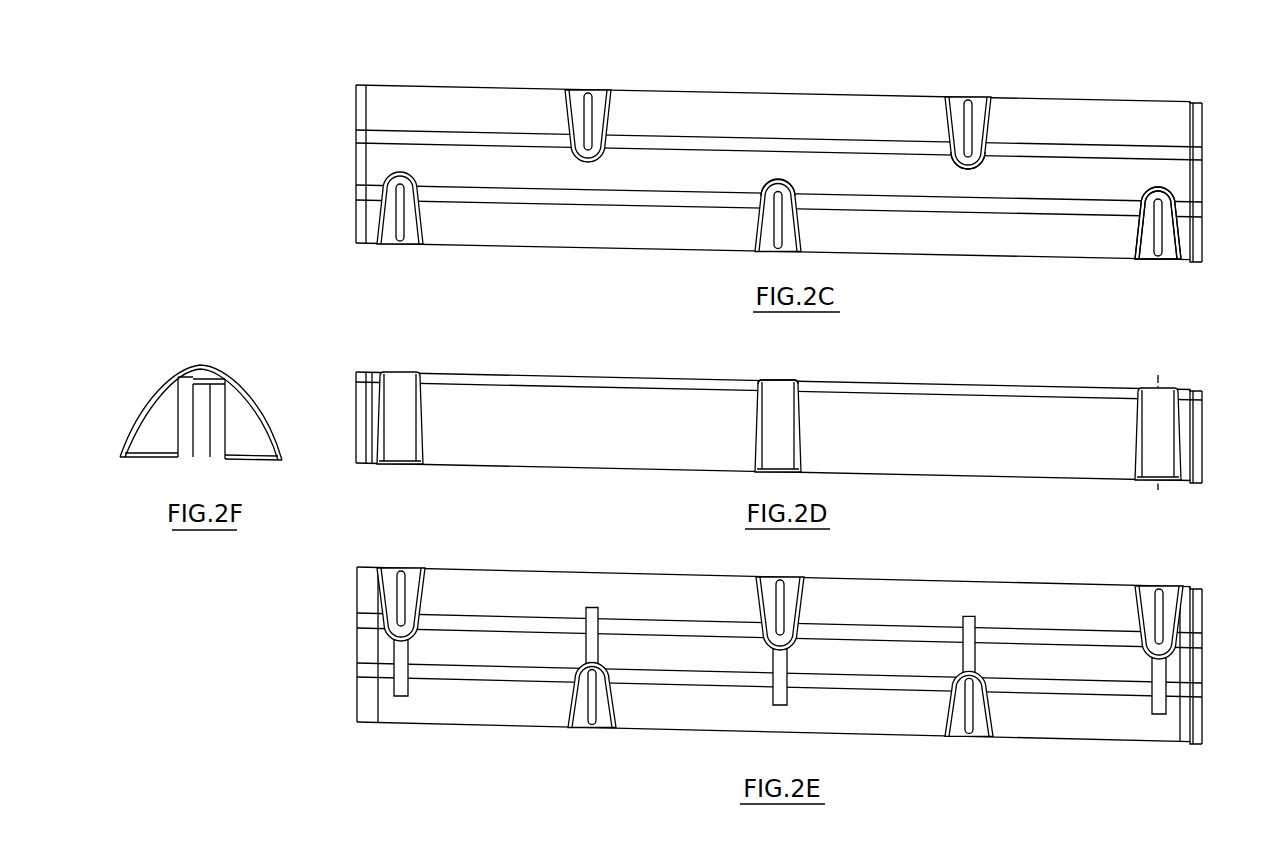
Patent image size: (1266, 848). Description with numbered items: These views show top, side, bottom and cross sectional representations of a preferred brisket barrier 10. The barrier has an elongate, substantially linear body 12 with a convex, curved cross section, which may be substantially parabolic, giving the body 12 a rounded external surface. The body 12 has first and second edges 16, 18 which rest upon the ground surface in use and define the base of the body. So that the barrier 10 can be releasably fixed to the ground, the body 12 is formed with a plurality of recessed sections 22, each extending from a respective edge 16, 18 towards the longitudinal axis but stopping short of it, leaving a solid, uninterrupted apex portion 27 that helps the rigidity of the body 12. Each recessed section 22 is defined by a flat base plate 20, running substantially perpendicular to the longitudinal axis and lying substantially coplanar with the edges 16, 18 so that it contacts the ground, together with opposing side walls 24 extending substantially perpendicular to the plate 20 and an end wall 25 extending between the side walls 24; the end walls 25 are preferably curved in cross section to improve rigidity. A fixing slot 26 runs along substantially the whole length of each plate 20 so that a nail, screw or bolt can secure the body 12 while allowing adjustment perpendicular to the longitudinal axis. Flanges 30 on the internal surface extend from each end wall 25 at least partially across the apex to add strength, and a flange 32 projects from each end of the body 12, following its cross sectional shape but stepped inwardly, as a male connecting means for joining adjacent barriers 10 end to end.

In FIG. 2C, the brisket barrier 10 is at (1203, 88).
In FIG. 2D, the brisket barrier 10 is at (1203, 386).
In FIG. 2E, the brisket barrier 10 is at (1203, 588).
In FIG. 2F, the brisket barrier 10 is at (245, 359).
In FIG. 2C, the body 12 is at (578, 235).
In FIG. 2D, the body 12 is at (607, 456).
In FIG. 2E, the body 12 is at (779, 655).
In FIG. 2F, the body 12 is at (265, 418).
In FIG. 2C, the first edge 16 is at (969, 260).
In FIG. 2D, the first edge 16 is at (940, 478).
In FIG. 2C, the second edge 18 is at (785, 92).
In FIG. 2C, the plate 20 is at (408, 237).
In FIG. 2E, the plate 20 is at (961, 730).
In FIG. 2C, the recessed section 22 is at (610, 121).
In FIG. 2D, the recessed section 22 is at (419, 403).
In FIG. 2E, the recessed section 22 is at (413, 576).
In FIG. 2C, the side wall 24 is at (945, 128).
In FIG. 2D, the side wall 24 is at (760, 438).
In FIG. 2F, the side wall 24 is at (152, 440).
In FIG. 2C, the end wall 25 is at (781, 183).
In FIG. 2D, the end wall 25 is at (781, 397).
In FIG. 2C, the fixing slot 26 is at (590, 100).
In FIG. 2E, the fixing slot 26 is at (791, 586).
In FIG. 2D, the apex portion 27 is at (916, 384).
In FIG. 2E, the flange 30 is at (593, 612).
In FIG. 2F, the flange 30 is at (205, 372).
In FIG. 2C, the flange 32 is at (361, 165).
In FIG. 2D, the flange 32 is at (1201, 425).
In FIG. 2E, the flange 32 is at (361, 645).